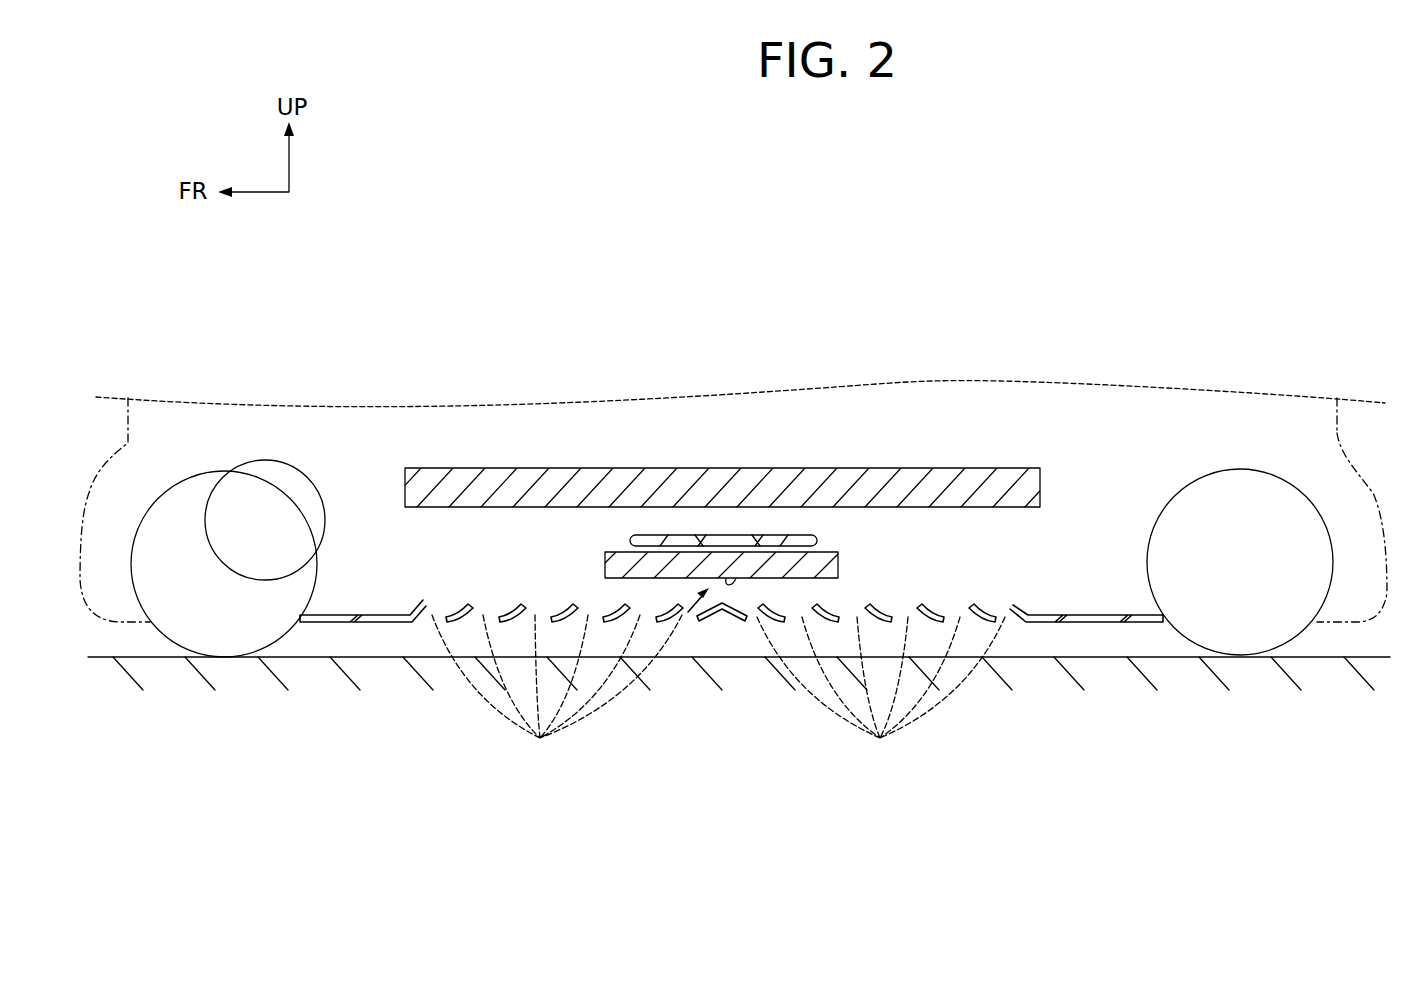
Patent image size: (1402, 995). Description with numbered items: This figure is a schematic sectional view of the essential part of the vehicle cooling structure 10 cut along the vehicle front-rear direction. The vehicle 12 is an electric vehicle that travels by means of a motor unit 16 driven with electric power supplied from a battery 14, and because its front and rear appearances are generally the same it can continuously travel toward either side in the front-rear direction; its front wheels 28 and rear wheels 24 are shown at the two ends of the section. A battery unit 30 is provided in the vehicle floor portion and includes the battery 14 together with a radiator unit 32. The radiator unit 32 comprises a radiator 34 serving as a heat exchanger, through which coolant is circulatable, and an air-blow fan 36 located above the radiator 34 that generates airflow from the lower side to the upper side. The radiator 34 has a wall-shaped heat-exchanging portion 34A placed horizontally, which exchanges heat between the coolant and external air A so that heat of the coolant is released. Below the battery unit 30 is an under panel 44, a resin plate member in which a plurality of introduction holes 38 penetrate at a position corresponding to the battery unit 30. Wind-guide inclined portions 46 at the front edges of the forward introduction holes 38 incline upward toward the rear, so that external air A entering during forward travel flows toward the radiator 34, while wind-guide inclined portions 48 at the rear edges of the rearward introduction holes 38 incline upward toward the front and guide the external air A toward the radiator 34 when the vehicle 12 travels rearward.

The vehicle cooling structure 10 is at (899, 447).
The vehicle 12 is at (1338, 437).
The battery 14 is at (805, 467).
The motor unit 16 is at (272, 460).
The rear wheels 24 is at (1272, 471).
The front wheels 28 is at (177, 477).
The battery unit 30 is at (1052, 449).
The radiator unit 32 is at (604, 568).
The radiator 34 is at (840, 568).
The heat-exchanging portion 34A is at (736, 578).
The air-blow fan 36 is at (780, 535).
The introduction holes 38 is at (524, 779).
The under panel 44 is at (367, 623).
The wind-guide inclined portions 46 is at (680, 603).
The wind-guide inclined portions 48 is at (1013, 605).
The external air A is at (688, 614).